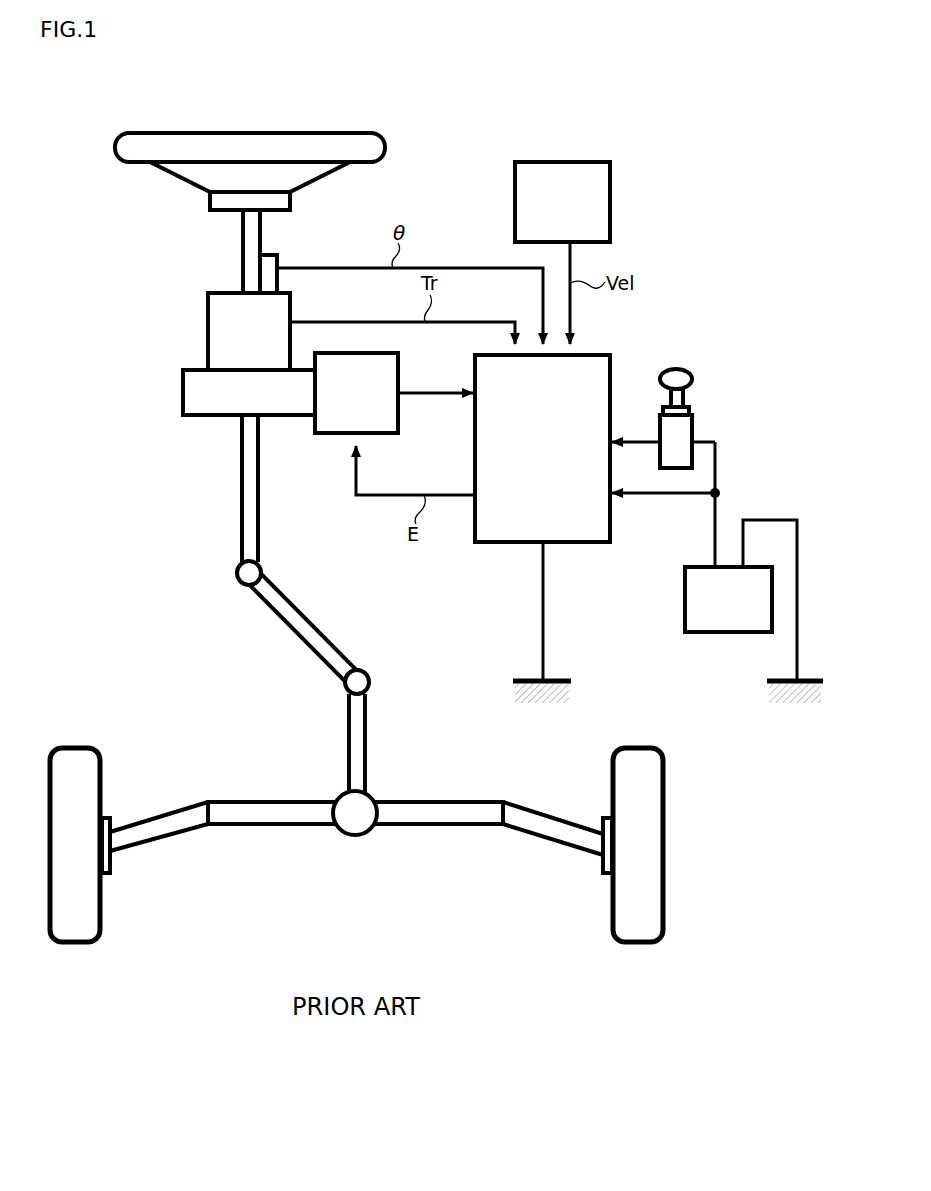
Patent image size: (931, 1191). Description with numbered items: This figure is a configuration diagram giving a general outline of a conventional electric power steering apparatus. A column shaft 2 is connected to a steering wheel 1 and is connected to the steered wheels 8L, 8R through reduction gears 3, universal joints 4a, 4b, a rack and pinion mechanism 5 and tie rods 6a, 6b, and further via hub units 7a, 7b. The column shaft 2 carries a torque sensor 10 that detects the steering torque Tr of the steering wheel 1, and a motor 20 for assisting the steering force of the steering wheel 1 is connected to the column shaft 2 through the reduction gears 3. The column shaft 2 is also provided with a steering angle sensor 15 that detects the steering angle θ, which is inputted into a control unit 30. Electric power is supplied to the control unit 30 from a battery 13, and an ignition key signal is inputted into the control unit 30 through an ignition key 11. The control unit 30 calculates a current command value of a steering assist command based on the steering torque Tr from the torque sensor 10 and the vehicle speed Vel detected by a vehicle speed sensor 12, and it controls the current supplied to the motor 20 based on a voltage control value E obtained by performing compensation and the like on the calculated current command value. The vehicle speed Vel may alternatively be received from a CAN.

The steering wheel 1 is at (385, 146).
The column shaft 2 is at (242, 257).
The reduction gears 3 is at (183, 397).
The universal joint 4a is at (237, 580).
The universal joint 4b is at (345, 687).
The rack and pinion mechanism 5 is at (371, 795).
The tie rod 6a is at (140, 820).
The tie rod 6b is at (535, 812).
The hub unit 7a is at (110, 866).
The hub unit 7b is at (601, 866).
The steered wheel 8L is at (100, 928).
The steered wheel 8R is at (612, 928).
The torque sensor 10 is at (208, 322).
The ignition key 11 is at (692, 377).
The vehicle speed sensor 12 is at (611, 168).
The battery 13 is at (685, 594).
The steering angle sensor 15 is at (279, 282).
The motor 20 is at (398, 357).
The control unit (ECU) 30 is at (611, 358).